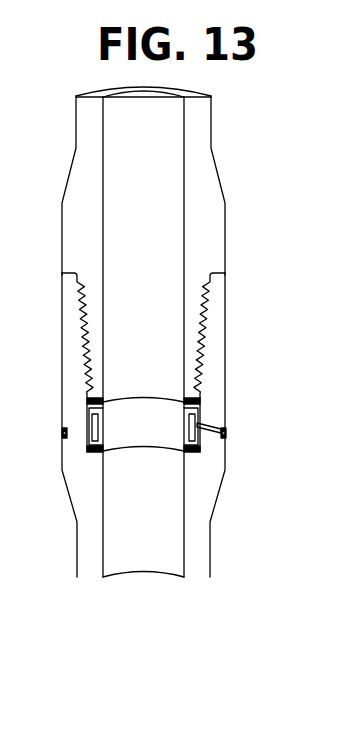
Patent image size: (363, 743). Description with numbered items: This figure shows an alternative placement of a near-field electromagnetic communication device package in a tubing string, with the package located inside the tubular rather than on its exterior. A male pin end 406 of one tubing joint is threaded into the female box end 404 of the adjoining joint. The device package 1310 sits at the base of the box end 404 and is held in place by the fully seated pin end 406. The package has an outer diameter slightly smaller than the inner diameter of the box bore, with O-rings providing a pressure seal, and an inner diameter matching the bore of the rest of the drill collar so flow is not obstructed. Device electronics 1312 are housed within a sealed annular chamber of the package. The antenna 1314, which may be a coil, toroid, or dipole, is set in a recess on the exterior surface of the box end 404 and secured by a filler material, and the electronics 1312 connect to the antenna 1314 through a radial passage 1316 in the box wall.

The pin end 406 is at (62, 236).
The box end 404 is at (62, 335).
The device package 1310 is at (160, 398).
The device electronics 1312 is at (98, 436).
The antenna 1314 is at (62, 432).
The radial passage 1316 is at (212, 425).